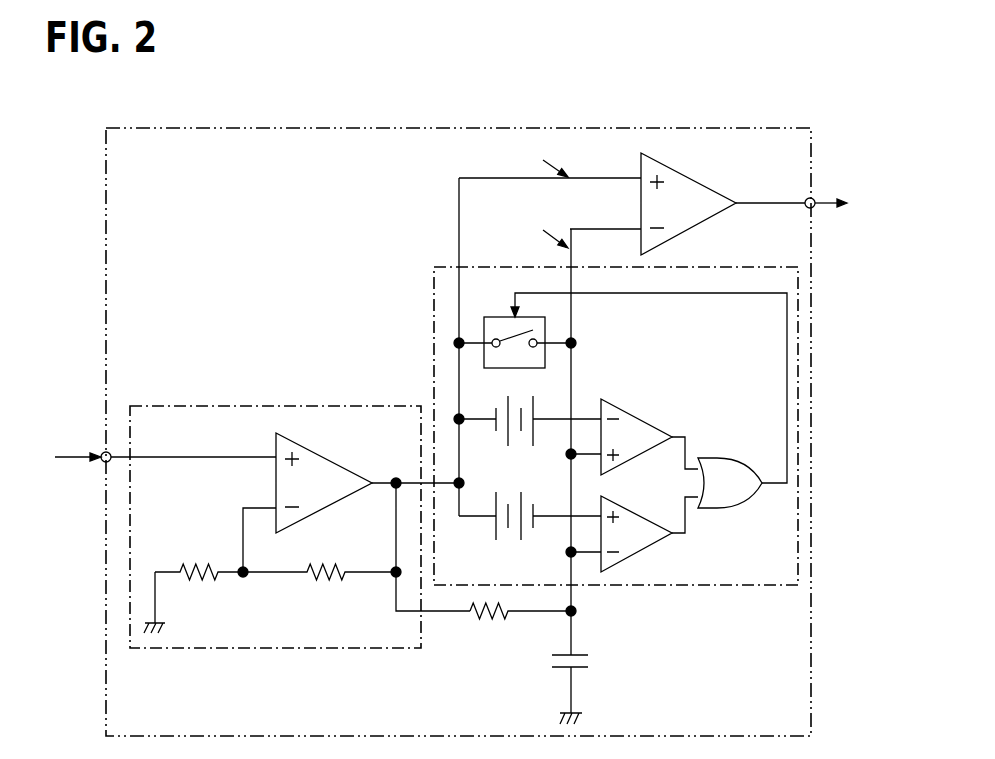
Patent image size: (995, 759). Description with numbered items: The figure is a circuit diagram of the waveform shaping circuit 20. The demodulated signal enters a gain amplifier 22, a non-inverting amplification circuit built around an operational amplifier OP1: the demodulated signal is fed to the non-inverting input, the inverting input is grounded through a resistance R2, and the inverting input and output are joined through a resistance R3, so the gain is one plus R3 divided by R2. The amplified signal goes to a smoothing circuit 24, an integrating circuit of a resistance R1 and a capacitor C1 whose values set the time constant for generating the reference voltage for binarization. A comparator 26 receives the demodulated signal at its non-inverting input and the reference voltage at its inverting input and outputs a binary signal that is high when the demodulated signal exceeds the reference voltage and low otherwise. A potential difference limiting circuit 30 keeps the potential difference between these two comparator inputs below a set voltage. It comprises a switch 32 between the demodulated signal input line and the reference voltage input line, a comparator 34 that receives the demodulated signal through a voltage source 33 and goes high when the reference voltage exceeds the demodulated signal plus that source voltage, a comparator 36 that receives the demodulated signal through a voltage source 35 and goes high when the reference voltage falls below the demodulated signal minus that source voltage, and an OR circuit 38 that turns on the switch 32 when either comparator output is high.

The waveform shaping circuit 20 is at (261, 128).
The gain amplifier 22 is at (166, 406).
The smoothing circuit 24 is at (519, 663).
The comparator 26 is at (695, 185).
The potential difference limiting circuit 30 is at (434, 290).
The switch 32 is at (500, 317).
The voltage source 33 is at (503, 394).
The comparator 34 is at (633, 416).
The voltage source 35 is at (503, 492).
The comparator 36 is at (633, 517).
The OR circuit 38 is at (722, 458).
The operational amplifier OP1 is at (327, 465).
The resistance R1 is at (486, 628).
The resistance R2 is at (194, 585).
The resistance R3 is at (323, 585).
The capacitor C1 is at (553, 658).